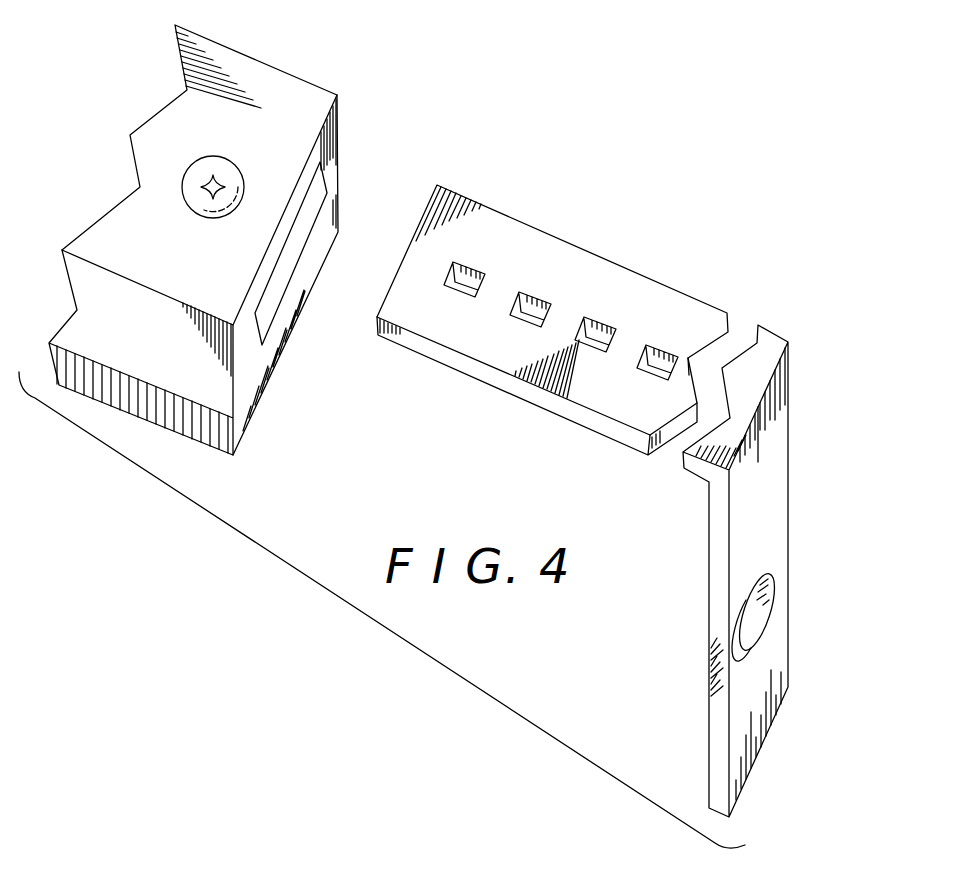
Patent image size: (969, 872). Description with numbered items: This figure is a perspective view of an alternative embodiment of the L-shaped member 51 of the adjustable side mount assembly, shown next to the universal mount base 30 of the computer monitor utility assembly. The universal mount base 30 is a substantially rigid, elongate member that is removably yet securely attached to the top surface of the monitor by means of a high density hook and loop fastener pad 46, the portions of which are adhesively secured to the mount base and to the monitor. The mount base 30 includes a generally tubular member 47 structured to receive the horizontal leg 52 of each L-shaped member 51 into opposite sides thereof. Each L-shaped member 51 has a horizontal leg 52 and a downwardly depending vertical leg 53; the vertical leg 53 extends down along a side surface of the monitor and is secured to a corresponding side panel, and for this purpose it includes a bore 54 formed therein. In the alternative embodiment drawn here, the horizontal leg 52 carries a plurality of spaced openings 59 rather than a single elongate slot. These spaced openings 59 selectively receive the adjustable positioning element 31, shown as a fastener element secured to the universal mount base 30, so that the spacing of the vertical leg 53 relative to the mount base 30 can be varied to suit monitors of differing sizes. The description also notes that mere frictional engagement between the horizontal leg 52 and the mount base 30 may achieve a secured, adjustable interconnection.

The universal mount base 30 is at (290, 50).
The fastener element 31 is at (217, 157).
The hook and loop fastener pad 46 is at (332, 207).
The tubular member 47 is at (333, 120).
The L-shaped member 51 is at (840, 256).
The horizontal leg 52 is at (618, 260).
The vertical leg 53 is at (795, 538).
The bore 54 is at (764, 615).
The spaced openings 59 is at (543, 292).